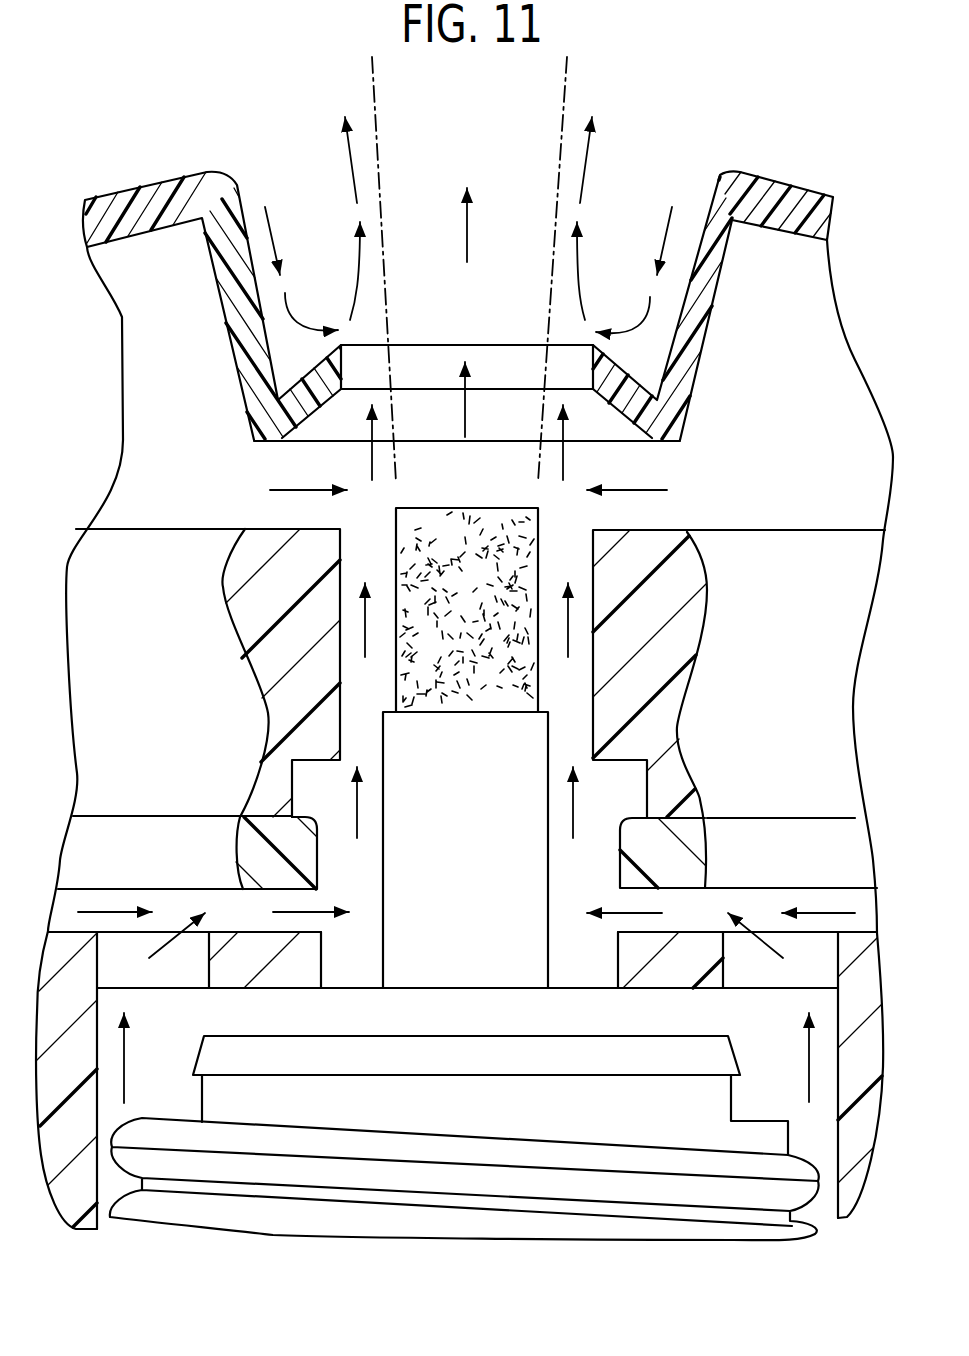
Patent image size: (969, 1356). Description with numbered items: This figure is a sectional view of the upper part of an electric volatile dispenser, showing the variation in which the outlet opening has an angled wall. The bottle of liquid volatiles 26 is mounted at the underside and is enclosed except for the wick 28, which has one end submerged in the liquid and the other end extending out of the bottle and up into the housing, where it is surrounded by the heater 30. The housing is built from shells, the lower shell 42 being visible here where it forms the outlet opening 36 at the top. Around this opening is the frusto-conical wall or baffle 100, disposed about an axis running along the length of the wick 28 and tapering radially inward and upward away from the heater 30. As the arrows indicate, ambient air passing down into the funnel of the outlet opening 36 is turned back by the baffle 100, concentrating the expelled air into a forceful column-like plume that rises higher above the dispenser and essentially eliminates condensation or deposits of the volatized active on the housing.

The lower shell 42 is at (132, 207).
The outlet opening 36 is at (518, 342).
The frusto-conical wall or baffle 100 is at (300, 440).
The heater 30 is at (260, 547).
The wick 28 is at (463, 542).
The bottle of liquid volatiles 26 is at (260, 1213).